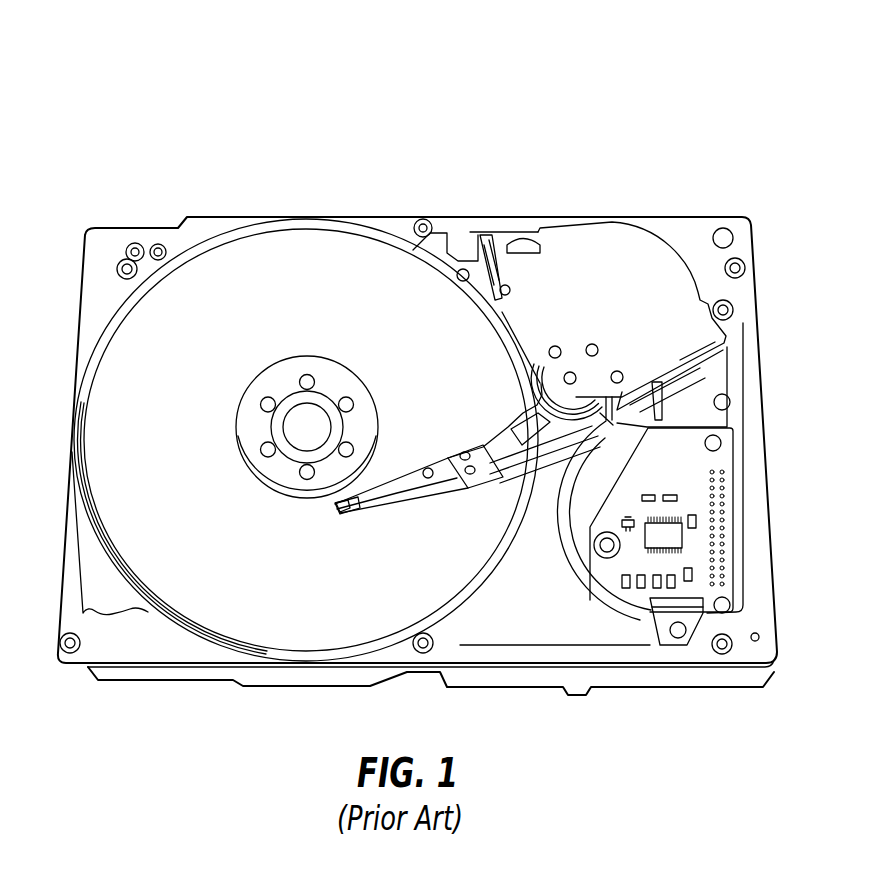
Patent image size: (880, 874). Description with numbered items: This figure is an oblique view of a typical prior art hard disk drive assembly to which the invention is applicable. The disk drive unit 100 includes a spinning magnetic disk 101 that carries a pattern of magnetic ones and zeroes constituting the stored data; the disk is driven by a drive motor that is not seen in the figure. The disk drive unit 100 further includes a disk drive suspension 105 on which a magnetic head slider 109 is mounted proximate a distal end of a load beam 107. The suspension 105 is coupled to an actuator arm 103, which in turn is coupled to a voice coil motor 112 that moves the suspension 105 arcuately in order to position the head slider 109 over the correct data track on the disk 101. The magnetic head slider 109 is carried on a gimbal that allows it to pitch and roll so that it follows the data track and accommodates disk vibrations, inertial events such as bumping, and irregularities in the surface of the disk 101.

The disk drive unit 100 is at (313, 183).
The magnetic disk 101 is at (262, 272).
The actuator arm 103 is at (512, 457).
The disk drive suspension 105 is at (387, 518).
The load beam 107 is at (427, 467).
The magnetic head slider 109 is at (346, 513).
The voice coil motor 112 is at (603, 307).